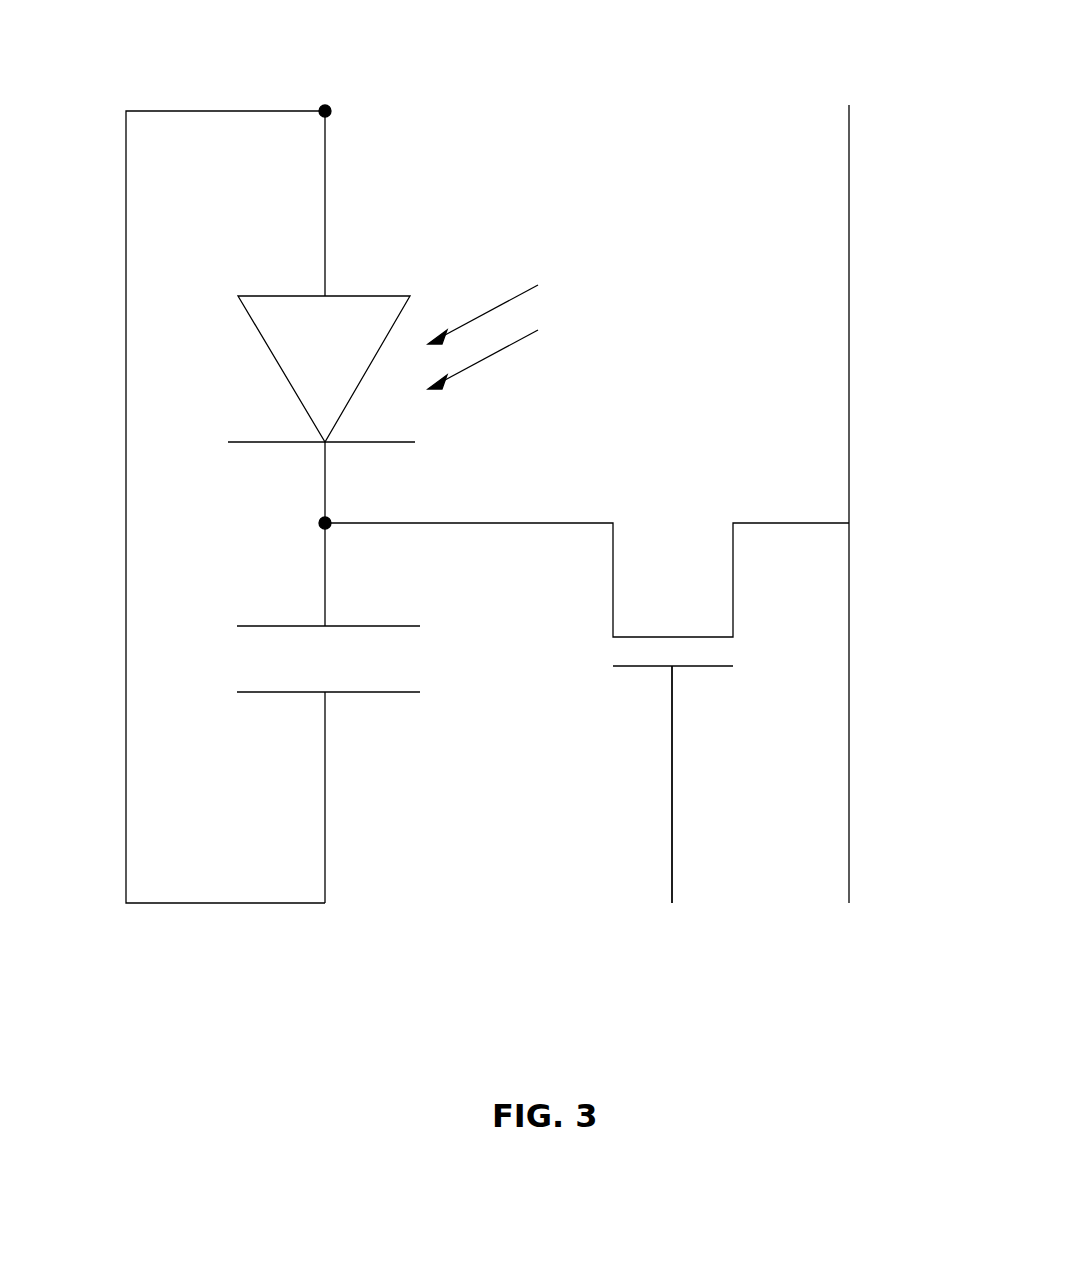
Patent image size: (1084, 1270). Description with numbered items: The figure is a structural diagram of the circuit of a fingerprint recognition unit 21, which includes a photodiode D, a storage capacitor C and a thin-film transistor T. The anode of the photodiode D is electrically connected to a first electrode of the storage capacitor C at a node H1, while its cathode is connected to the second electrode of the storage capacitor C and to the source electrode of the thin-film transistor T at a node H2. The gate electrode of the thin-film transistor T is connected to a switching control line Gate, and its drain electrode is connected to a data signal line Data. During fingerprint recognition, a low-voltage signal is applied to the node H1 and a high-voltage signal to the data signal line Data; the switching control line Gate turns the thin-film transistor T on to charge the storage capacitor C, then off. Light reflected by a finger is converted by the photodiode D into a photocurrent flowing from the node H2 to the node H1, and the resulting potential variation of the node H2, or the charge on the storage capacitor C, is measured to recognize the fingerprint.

The fingerprint recognition unit 21 is at (569, 107).
The photodiode D is at (383, 340).
The storage capacitor C is at (337, 659).
The thin-film transistor T is at (587, 697).
The node H1 is at (311, 84).
The node H2 is at (294, 525).
The data signal line Data is at (852, 484).
The switching control line Gate is at (673, 809).